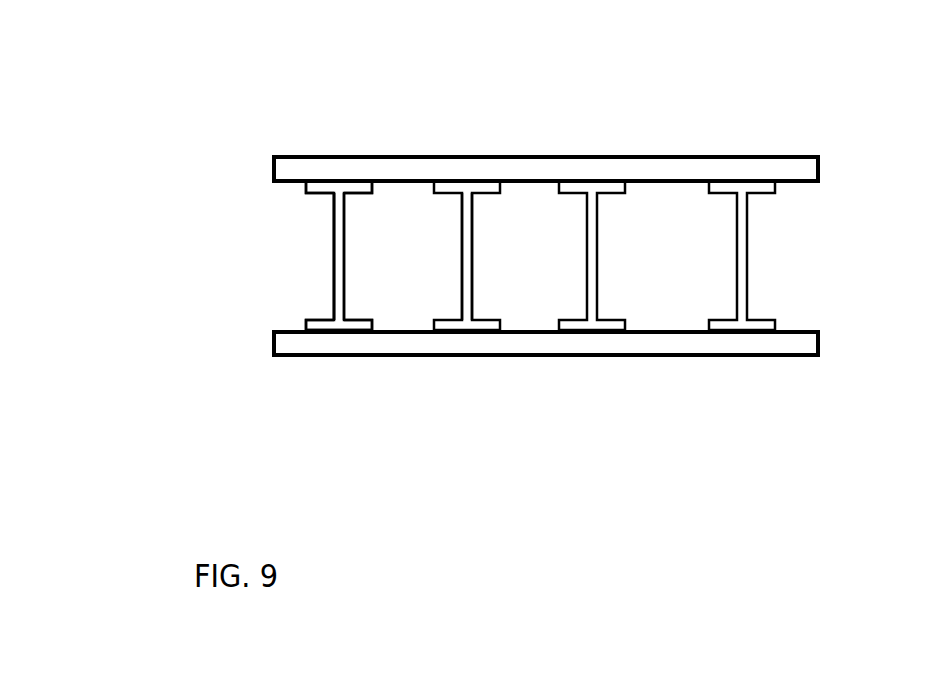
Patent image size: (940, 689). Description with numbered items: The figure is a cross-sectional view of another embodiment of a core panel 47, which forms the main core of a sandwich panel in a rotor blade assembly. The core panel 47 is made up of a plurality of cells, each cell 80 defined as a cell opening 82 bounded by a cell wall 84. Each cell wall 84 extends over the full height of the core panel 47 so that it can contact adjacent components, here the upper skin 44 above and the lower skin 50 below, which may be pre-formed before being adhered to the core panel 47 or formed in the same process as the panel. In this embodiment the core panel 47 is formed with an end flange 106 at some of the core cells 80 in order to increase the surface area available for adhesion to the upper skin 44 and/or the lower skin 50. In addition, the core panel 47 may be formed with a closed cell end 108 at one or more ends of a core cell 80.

The upper skin 44 is at (792, 168).
The core panel 47 is at (800, 248).
The lower skin 50 is at (810, 345).
The cell 80 is at (530, 193).
The cell opening 82 is at (517, 267).
The cell wall 84 is at (335, 230).
The end flange 106 is at (357, 188).
The closed cell end 108 is at (372, 323).